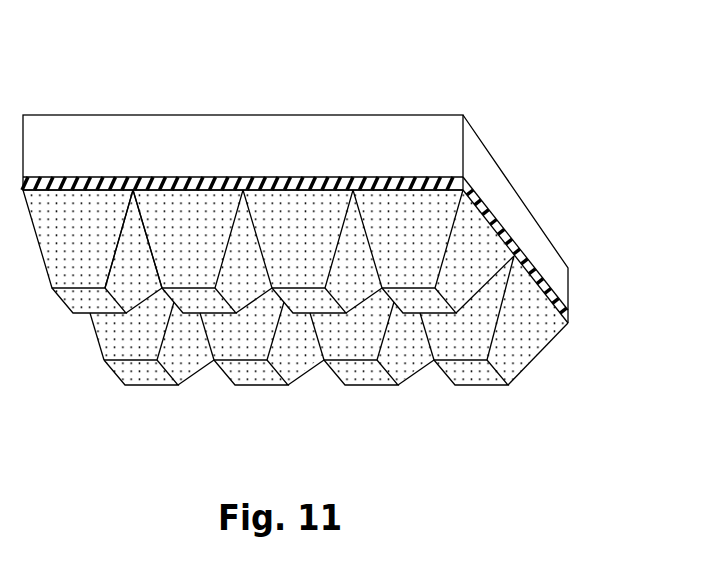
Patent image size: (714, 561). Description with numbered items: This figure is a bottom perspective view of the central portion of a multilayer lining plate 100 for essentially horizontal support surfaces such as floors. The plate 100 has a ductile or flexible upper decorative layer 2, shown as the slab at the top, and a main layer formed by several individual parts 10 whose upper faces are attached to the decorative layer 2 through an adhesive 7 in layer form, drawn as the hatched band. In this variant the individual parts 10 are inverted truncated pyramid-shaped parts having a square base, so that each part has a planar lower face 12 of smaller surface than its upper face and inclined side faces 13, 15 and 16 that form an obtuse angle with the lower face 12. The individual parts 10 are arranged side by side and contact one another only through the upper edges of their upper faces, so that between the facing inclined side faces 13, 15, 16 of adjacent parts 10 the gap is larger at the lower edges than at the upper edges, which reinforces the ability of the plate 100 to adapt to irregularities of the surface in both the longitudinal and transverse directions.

The multilayer lining plate 100 is at (357, 280).
The upper decorative layer 2 is at (263, 143).
The adhesive 7 is at (403, 178).
The individual part 10 is at (58, 356).
The lower face 12 is at (358, 386).
The side face 13 is at (317, 247).
The side face 15 is at (252, 258).
The side face 16 is at (487, 271).